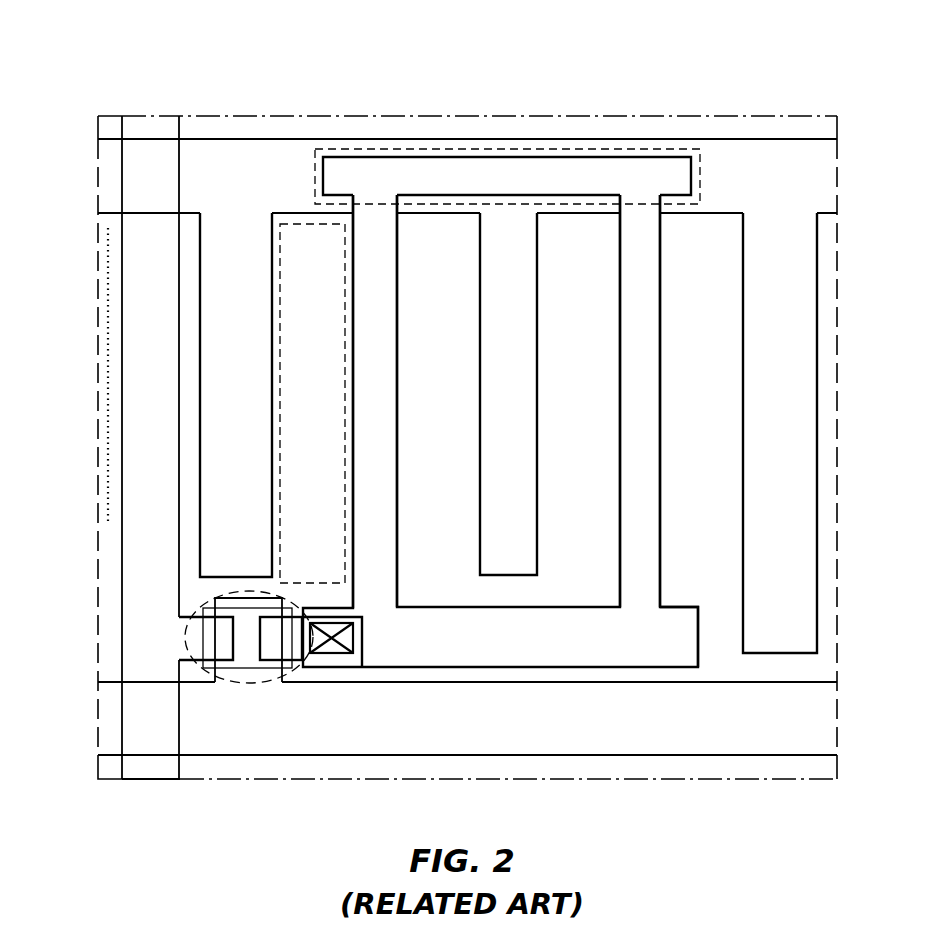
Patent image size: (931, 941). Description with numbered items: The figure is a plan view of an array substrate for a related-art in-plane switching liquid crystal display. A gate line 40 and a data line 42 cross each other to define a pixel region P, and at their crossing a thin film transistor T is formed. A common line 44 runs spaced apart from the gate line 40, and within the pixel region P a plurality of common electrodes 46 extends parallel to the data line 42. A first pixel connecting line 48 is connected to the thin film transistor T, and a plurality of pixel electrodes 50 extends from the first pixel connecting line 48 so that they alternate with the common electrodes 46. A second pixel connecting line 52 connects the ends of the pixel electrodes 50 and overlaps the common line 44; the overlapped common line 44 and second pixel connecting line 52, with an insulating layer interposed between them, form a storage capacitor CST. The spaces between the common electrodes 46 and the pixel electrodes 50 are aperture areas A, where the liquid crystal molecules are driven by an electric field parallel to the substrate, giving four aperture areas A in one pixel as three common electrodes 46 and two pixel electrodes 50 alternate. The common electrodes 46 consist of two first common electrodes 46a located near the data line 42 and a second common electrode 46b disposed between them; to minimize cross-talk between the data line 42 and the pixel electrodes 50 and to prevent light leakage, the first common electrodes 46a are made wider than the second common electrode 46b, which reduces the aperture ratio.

The gate line 40 is at (842, 682).
The data line 42 is at (179, 782).
The common line 44 is at (842, 139).
The common electrodes 46 is at (508, 345).
The first common electrodes 46a is at (237, 262).
The second common electrode 46b is at (505, 262).
The first pixel connecting line 48 is at (685, 618).
The pixel electrodes 50 is at (377, 580).
The second pixel connecting line 52 is at (624, 152).
The storage capacitor CST is at (701, 178).
The aperture areas A is at (280, 336).
The thin film transistor T is at (250, 687).
The pixel region P is at (726, 655).